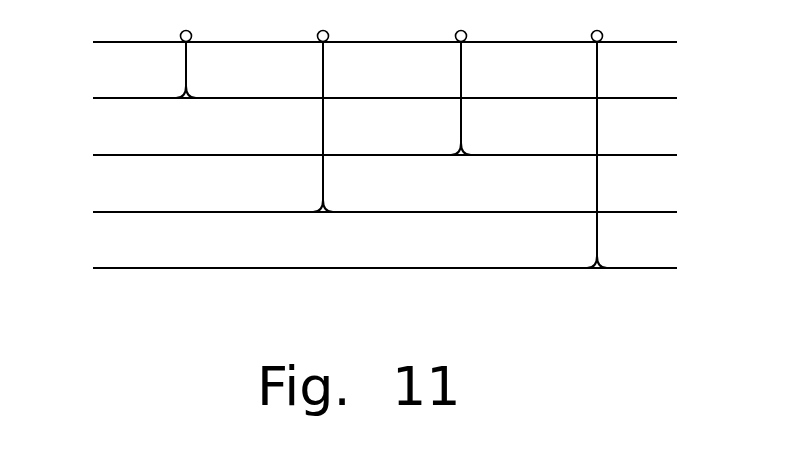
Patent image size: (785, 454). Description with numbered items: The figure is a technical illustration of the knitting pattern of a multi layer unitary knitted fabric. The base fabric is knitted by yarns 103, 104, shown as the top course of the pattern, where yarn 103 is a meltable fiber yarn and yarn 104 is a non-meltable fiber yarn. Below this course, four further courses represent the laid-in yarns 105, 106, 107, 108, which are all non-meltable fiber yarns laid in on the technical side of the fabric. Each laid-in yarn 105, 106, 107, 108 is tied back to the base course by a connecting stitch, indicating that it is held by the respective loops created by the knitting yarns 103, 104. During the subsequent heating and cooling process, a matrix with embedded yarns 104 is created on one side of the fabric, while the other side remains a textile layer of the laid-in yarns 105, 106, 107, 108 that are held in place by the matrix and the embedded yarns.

The yarn 103 is at (316, 35).
The yarn 104 is at (668, 41).
The laid-in yarn 105 is at (355, 159).
The laid-in yarn 106 is at (354, 132).
The laid-in yarn 107 is at (356, 101).
The laid-in yarn 108 is at (356, 70).